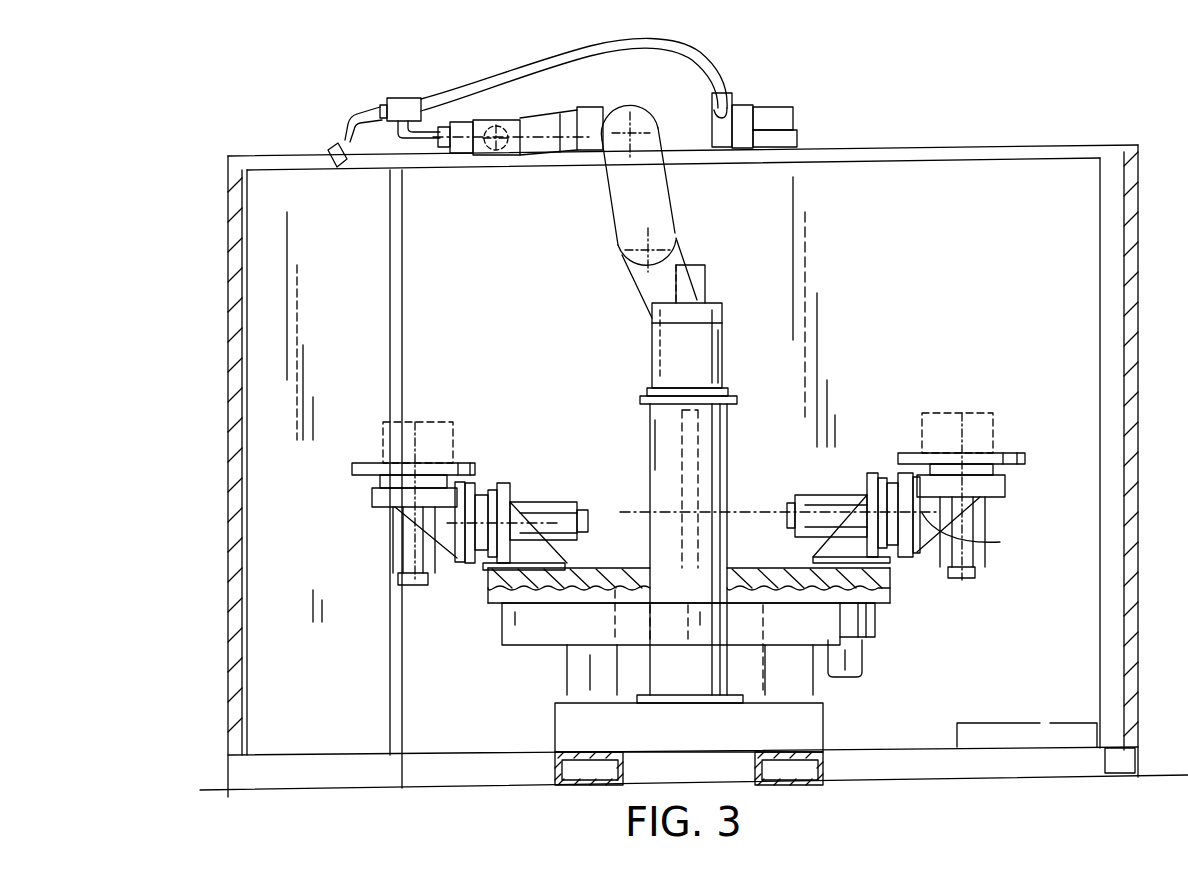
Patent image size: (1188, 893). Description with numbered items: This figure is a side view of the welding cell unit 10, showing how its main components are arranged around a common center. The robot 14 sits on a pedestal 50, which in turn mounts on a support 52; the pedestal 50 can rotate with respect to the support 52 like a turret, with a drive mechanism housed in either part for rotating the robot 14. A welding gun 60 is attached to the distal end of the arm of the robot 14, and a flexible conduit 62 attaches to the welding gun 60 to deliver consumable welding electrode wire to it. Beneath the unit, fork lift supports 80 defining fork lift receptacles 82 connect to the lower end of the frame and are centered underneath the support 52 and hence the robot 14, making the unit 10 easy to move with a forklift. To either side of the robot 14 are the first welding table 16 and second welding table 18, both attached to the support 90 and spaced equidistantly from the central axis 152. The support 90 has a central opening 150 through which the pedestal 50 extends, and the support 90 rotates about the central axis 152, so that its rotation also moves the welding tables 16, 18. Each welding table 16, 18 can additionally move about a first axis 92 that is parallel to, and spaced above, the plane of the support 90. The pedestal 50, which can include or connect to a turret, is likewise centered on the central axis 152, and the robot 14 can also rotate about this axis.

The welding cell unit 10 is at (1107, 77).
The robot 14 is at (715, 243).
The first welding table 16 is at (365, 465).
The second welding table 18 is at (1020, 458).
The pedestal 50 is at (717, 468).
The support 52 is at (817, 732).
The welding gun 60 is at (350, 122).
The conduit 62 is at (512, 78).
The fork lift supports 80 is at (557, 773).
The fork lift receptacles 82 is at (575, 773).
The support 90 is at (878, 580).
The first axis 92 is at (977, 534).
The central opening 150 is at (742, 573).
The central axis 152 is at (688, 333).